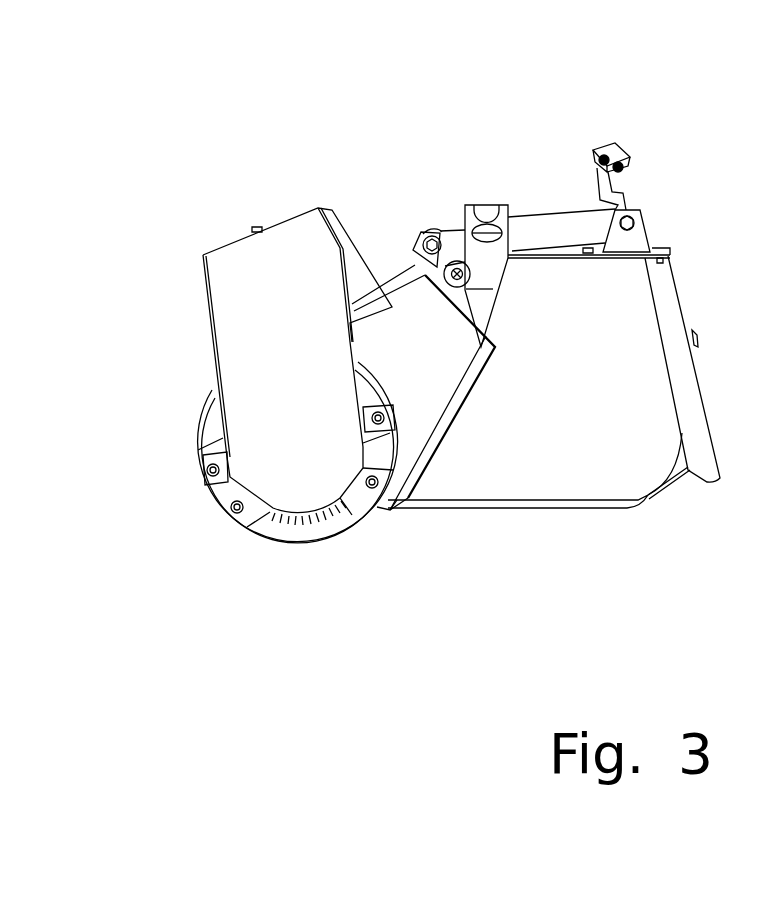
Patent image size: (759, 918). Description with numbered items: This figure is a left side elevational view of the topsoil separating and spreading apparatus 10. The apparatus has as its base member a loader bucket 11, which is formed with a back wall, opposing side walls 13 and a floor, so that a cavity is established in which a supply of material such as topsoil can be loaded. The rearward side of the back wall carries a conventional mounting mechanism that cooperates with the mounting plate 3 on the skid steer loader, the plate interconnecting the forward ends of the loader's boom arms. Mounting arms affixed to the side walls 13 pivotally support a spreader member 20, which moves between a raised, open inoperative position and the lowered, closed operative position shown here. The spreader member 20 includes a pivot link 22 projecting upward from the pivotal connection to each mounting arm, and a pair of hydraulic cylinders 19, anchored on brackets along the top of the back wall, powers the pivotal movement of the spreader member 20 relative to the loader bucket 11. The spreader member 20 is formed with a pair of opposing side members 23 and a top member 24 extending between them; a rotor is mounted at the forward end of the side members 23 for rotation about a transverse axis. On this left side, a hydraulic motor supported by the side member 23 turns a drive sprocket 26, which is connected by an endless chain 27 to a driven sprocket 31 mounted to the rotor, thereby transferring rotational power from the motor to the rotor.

The mounting plate 3 is at (690, 306).
The topsoil separating and spreading apparatus 10 is at (446, 571).
The loader bucket 11 is at (470, 492).
The side walls 13 is at (500, 420).
The hydraulic cylinders 19 is at (579, 227).
The spreader member 20 is at (196, 116).
The pivot link 22 is at (427, 253).
The side members 23 is at (385, 350).
The top member 24 is at (562, 253).
The drive sprocket 26 is at (201, 278).
The endless chain 27 is at (205, 366).
The driven sprocket 31 is at (232, 533).